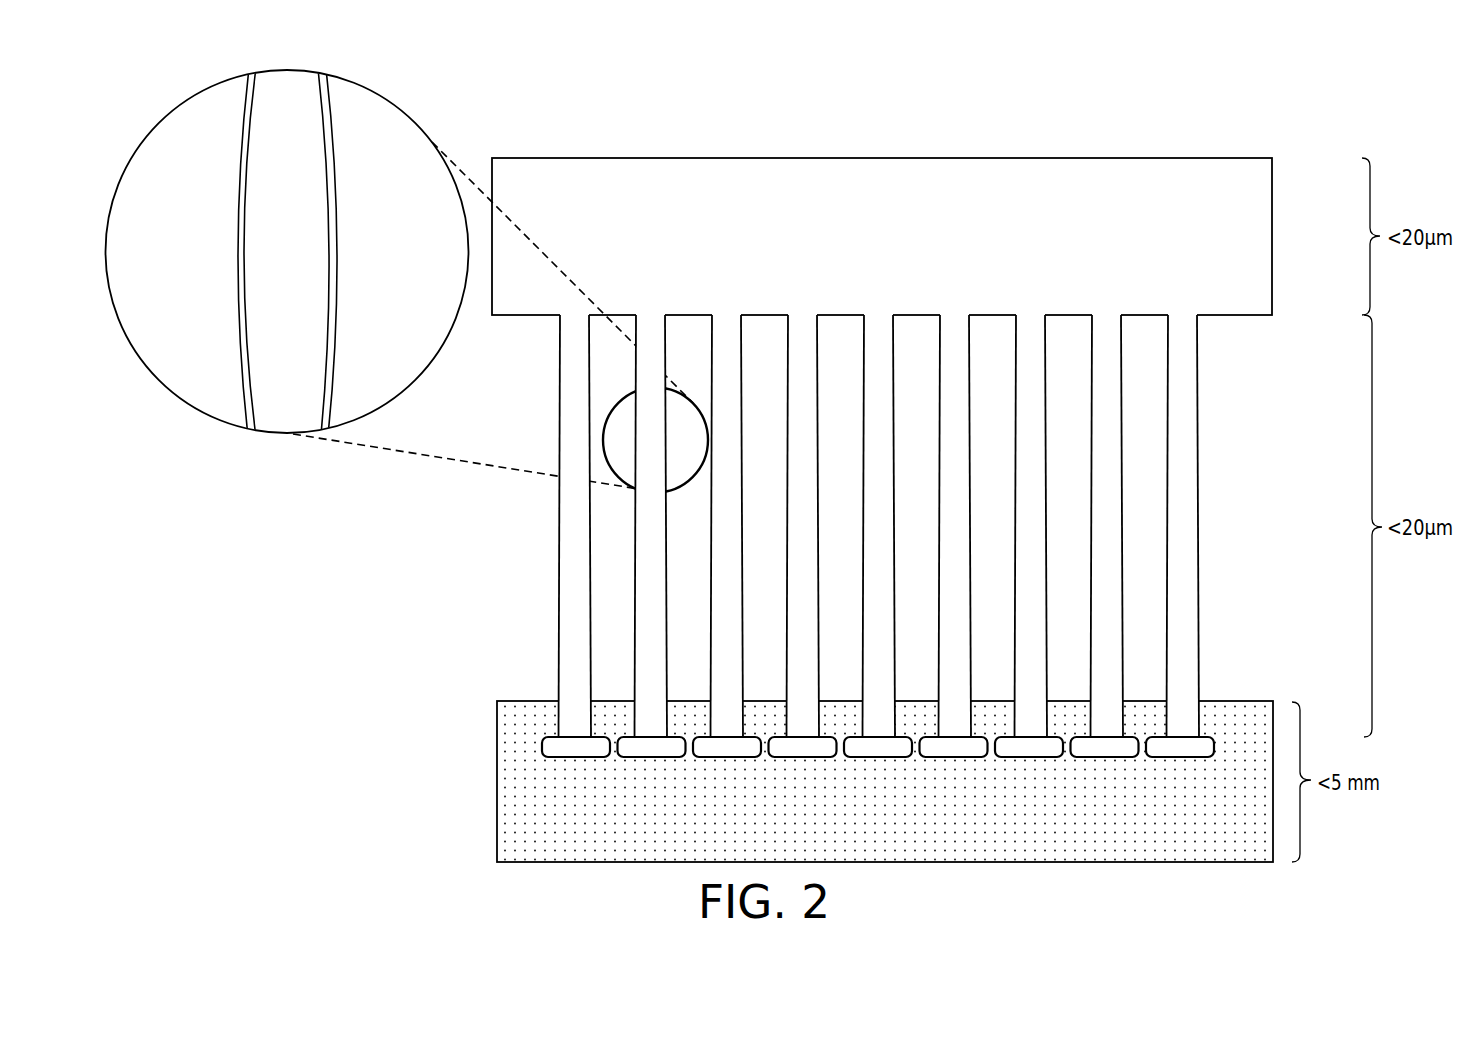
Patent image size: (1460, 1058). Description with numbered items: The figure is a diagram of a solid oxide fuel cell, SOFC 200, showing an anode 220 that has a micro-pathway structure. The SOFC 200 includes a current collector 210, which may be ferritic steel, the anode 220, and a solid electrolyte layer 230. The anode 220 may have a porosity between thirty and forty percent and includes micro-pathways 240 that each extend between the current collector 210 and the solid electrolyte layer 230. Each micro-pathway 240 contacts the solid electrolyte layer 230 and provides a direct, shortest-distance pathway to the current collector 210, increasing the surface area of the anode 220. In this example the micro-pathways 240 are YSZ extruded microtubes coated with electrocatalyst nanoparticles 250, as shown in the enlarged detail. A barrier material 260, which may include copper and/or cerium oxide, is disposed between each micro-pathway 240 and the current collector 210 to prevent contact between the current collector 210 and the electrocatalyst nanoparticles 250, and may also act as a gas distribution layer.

The SOFC 200 is at (150, 70).
The current collector 210 is at (497, 780).
The anode 220 is at (1292, 315).
The solid electrolyte layer 230 is at (1258, 158).
The micro-pathways 240 is at (285, 396).
The electrocatalyst nanoparticles 250 is at (245, 252).
The barrier material 260 is at (548, 742).